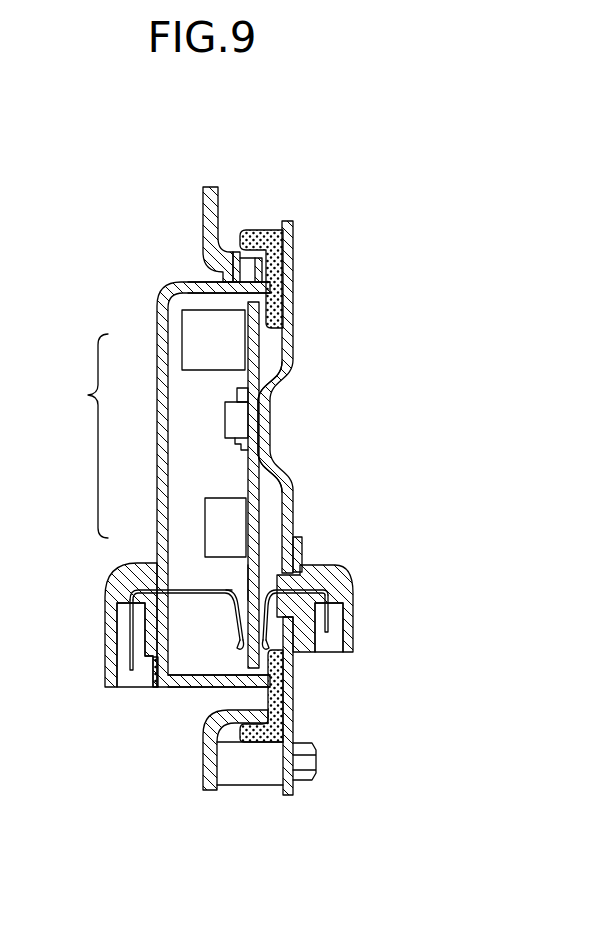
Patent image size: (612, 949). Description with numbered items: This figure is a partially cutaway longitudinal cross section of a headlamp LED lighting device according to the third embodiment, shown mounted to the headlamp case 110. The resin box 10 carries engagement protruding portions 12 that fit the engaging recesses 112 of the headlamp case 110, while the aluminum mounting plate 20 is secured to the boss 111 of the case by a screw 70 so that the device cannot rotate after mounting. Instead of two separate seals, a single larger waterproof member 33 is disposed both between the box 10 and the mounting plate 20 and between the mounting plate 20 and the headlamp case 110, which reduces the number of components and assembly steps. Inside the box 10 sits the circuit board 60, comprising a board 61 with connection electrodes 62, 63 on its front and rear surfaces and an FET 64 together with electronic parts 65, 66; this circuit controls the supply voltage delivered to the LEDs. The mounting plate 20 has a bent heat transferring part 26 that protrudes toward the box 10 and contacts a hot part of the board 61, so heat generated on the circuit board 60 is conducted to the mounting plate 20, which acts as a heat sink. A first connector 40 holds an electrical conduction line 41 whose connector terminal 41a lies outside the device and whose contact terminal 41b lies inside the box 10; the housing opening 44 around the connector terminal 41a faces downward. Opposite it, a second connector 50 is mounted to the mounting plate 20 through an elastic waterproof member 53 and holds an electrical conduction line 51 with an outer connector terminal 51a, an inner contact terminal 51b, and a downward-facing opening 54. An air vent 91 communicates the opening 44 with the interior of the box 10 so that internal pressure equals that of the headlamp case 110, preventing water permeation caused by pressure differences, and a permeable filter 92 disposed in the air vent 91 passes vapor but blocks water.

The box 10 is at (156, 300).
The engagement protruding portion 12 is at (232, 298).
The mounting plate 20 is at (294, 246).
The heat transferring part 26 is at (272, 418).
The waterproof member 33 is at (274, 252).
The first connector 40 is at (133, 578).
The electrical conduction line 41 is at (133, 580).
The connector terminal 41a is at (129, 645).
The contact terminal 41b is at (244, 640).
The opening 44 is at (123, 668).
The second connector 50 is at (331, 572).
The electrical conduction line 51 is at (313, 588).
The connector terminal 51a is at (335, 609).
The contact terminal 51b is at (268, 647).
The waterproof member 53 is at (299, 540).
The opening 54 is at (322, 642).
The circuit board 60 is at (79, 436).
The board 61 is at (246, 482).
The electrode 62 is at (228, 590).
The electrode 63 is at (247, 583).
The FET 64 is at (225, 424).
The electronic part 65 is at (200, 352).
The electronic part 66 is at (227, 512).
The screw 70 is at (313, 776).
The air vent 91 is at (164, 678).
The permeable filter 92 is at (155, 664).
The headlamp case 110 is at (203, 215).
The boss 111 is at (260, 776).
The engaging recess 112 is at (235, 262).